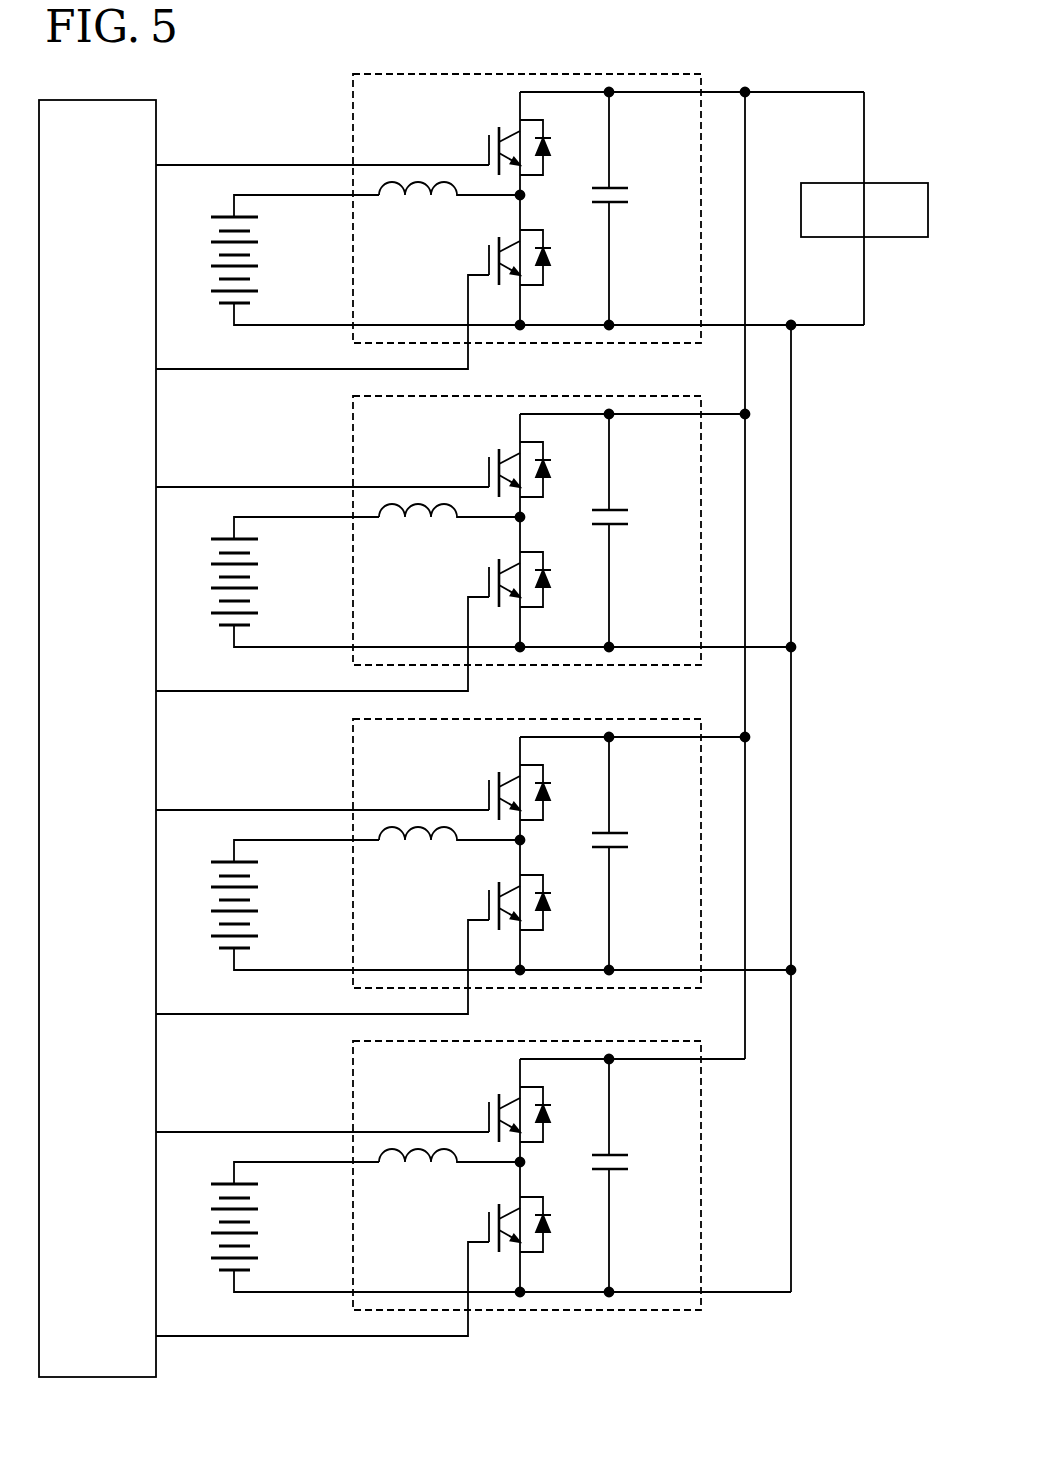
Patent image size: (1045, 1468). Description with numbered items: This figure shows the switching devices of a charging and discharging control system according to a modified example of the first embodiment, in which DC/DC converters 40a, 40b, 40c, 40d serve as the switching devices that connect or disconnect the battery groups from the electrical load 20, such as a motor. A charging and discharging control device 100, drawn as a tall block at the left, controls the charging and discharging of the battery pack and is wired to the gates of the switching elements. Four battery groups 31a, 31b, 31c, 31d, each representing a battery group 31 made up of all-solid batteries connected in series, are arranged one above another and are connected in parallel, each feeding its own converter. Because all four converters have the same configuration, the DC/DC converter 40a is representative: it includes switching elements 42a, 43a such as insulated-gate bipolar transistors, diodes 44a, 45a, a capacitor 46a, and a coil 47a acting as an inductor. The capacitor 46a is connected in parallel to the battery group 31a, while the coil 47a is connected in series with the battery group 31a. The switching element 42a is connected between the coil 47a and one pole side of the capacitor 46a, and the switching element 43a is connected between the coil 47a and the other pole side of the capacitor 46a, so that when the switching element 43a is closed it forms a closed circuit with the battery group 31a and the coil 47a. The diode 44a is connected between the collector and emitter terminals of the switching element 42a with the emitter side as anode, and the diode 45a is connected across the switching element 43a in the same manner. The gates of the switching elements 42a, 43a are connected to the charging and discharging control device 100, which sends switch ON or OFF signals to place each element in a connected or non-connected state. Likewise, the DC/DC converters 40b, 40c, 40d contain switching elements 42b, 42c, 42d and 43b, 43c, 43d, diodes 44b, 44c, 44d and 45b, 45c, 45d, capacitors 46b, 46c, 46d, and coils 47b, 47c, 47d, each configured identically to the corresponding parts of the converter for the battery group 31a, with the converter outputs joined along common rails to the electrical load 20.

The charging and discharging control device 100 is at (91, 99).
The electrical load 20 is at (887, 182).
The battery group 31 is at (240, 261).
The battery group 31a is at (270, 266).
The battery group 31b is at (262, 576).
The battery group 31c is at (262, 899).
The battery group 31d is at (262, 1221).
The DC/DC converter 40a is at (635, 72).
The DC/DC converter 40b is at (528, 513).
The DC/DC converter 40c is at (528, 836).
The DC/DC converter 40d is at (528, 1158).
The switching element 42a is at (489, 148).
The switching element 42b is at (467, 461).
The switching element 42c is at (467, 784).
The switching element 42d is at (467, 1106).
The switching element 43a is at (489, 258).
The switching element 43b is at (467, 571).
The switching element 43c is at (467, 894).
The switching element 43d is at (467, 1216).
The diode 44a is at (553, 152).
The diode 44b is at (560, 460).
The diode 44c is at (560, 783).
The diode 44d is at (560, 1105).
The diode 45a is at (553, 262).
The diode 45b is at (560, 570).
The diode 45c is at (560, 893).
The diode 45d is at (560, 1215).
The capacitor 46a is at (624, 184).
The capacitor 46b is at (641, 530).
The capacitor 46c is at (641, 853).
The capacitor 46d is at (641, 1175).
The coil 47a is at (386, 208).
The coil 47b is at (447, 547).
The coil 47c is at (447, 870).
The coil 47d is at (447, 1192).